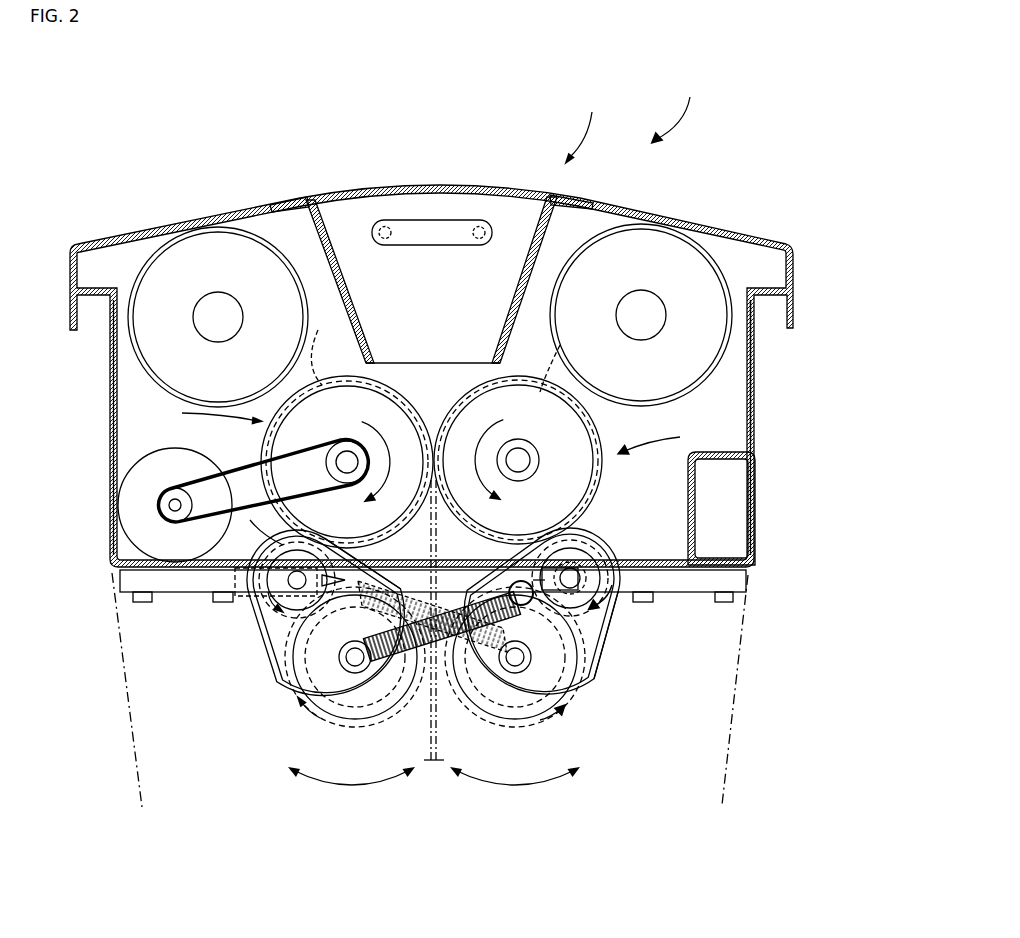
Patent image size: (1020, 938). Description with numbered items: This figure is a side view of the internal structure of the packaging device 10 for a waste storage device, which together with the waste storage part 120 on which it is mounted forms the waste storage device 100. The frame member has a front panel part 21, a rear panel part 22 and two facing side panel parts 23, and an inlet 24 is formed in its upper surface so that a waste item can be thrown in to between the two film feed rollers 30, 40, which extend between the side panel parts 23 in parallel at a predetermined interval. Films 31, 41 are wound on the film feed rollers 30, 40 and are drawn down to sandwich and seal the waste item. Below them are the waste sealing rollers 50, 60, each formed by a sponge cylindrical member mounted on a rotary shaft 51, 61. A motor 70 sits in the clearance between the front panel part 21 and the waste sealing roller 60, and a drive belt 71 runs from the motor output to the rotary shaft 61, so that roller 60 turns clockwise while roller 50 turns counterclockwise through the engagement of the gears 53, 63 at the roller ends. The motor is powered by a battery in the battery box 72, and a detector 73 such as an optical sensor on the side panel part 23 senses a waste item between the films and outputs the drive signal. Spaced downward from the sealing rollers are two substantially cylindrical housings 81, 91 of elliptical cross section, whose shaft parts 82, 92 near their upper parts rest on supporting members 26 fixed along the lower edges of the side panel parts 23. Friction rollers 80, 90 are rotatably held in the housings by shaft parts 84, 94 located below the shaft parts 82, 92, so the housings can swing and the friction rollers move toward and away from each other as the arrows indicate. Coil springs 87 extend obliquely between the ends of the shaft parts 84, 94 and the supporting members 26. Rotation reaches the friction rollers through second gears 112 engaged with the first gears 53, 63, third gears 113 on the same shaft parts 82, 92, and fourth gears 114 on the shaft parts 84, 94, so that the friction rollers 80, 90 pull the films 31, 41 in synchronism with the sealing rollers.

The waste storage device 100 is at (677, 108).
The packaging device for waste storage device 10 is at (431, 328).
The front panel part 21 is at (113, 370).
The rear panel part 22 is at (755, 416).
The side panel part 23 is at (750, 380).
The inlet 24 is at (377, 193).
The supporting member 26 is at (125, 585).
The film feed roller 30 is at (630, 292).
The film 31 is at (558, 382).
The film feed roller 40 is at (217, 293).
The film 41 is at (312, 368).
The waste sealing roller 50 is at (661, 440).
The rotary shaft 51 is at (535, 452).
The gear 53 is at (598, 500).
The waste sealing roller 60 is at (206, 414).
The rotary shaft 61 is at (336, 385).
The gear 63 is at (285, 500).
The motor 70 is at (125, 500).
The drive belt 71 is at (240, 462).
The battery box 72 is at (735, 517).
The detector 73 is at (428, 222).
The friction roller 80 is at (600, 683).
The housing 81 is at (607, 635).
The shaft part 82 is at (590, 586).
The shaft part 84 is at (525, 670).
The spring 87 is at (388, 675).
The friction roller 90 is at (275, 683).
The housing 91 is at (265, 652).
The shaft part 92 is at (252, 607).
The shaft part 94 is at (348, 680).
The second gear 112 is at (420, 608).
The third gear 113 is at (472, 608).
The fourth gear 114 is at (300, 727).
The waste storage part 120 is at (443, 690).